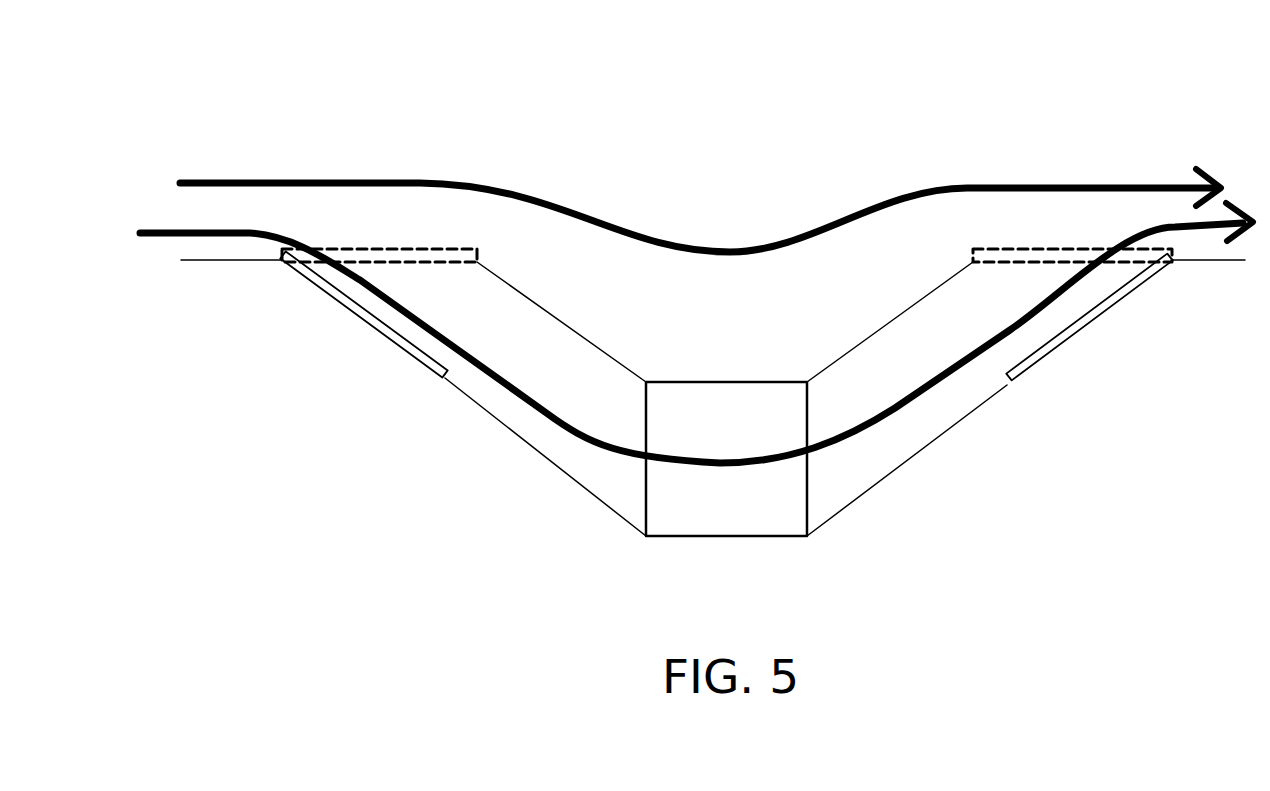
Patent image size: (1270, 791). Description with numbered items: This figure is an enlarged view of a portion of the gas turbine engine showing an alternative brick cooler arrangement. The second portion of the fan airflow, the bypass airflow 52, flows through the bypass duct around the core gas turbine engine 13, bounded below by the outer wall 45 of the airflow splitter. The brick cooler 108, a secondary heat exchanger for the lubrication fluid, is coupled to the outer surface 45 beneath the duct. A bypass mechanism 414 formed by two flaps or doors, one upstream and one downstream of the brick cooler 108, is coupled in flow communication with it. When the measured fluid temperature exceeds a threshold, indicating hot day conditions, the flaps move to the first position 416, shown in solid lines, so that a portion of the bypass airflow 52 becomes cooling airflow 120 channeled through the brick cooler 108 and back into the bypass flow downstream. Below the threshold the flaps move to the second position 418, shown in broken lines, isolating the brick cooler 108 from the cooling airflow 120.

The core gas turbine engine 13 is at (253, 127).
The outer wall of splitter 45 is at (212, 261).
The second portion of the airflow 52 is at (720, 257).
The brick cooler 108 is at (724, 518).
The cooling airflow 120 is at (882, 418).
The bypass mechanism 414 is at (445, 382).
The first position 416 is at (358, 325).
The second position 418 is at (428, 244).